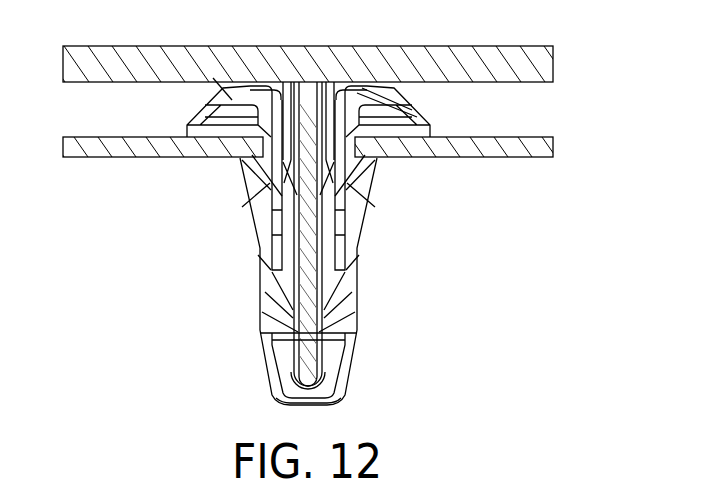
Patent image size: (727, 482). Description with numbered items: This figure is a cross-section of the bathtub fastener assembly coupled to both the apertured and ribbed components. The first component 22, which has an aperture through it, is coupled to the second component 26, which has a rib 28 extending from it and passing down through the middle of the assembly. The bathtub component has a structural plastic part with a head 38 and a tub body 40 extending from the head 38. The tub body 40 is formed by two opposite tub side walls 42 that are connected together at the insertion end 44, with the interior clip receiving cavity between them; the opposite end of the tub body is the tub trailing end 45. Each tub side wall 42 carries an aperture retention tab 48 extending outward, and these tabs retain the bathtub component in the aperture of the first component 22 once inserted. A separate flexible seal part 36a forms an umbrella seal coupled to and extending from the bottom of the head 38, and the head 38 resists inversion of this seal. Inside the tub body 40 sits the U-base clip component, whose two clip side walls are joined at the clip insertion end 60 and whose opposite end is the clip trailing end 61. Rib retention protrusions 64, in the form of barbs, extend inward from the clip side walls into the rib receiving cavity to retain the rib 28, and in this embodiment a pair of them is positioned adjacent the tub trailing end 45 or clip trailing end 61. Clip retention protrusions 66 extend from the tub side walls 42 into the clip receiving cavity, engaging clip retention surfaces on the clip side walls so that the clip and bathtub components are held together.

The first component 22 is at (136, 147).
The second component 26 is at (535, 60).
The rib 28 is at (308, 103).
The flexible seal part 36a is at (187, 125).
The head 38 is at (420, 100).
The tub body 40 is at (56, 470).
The tub side walls 42 is at (270, 257).
The insertion end 44 is at (313, 403).
The tub trailing end 45 is at (211, 78).
The aperture retention tab 48 is at (243, 167).
The clip insertion end 60 is at (313, 400).
The clip trailing end 61 is at (242, 66).
The rib retention protrusions 64 is at (297, 183).
The clip retention protrusions 66 is at (293, 313).